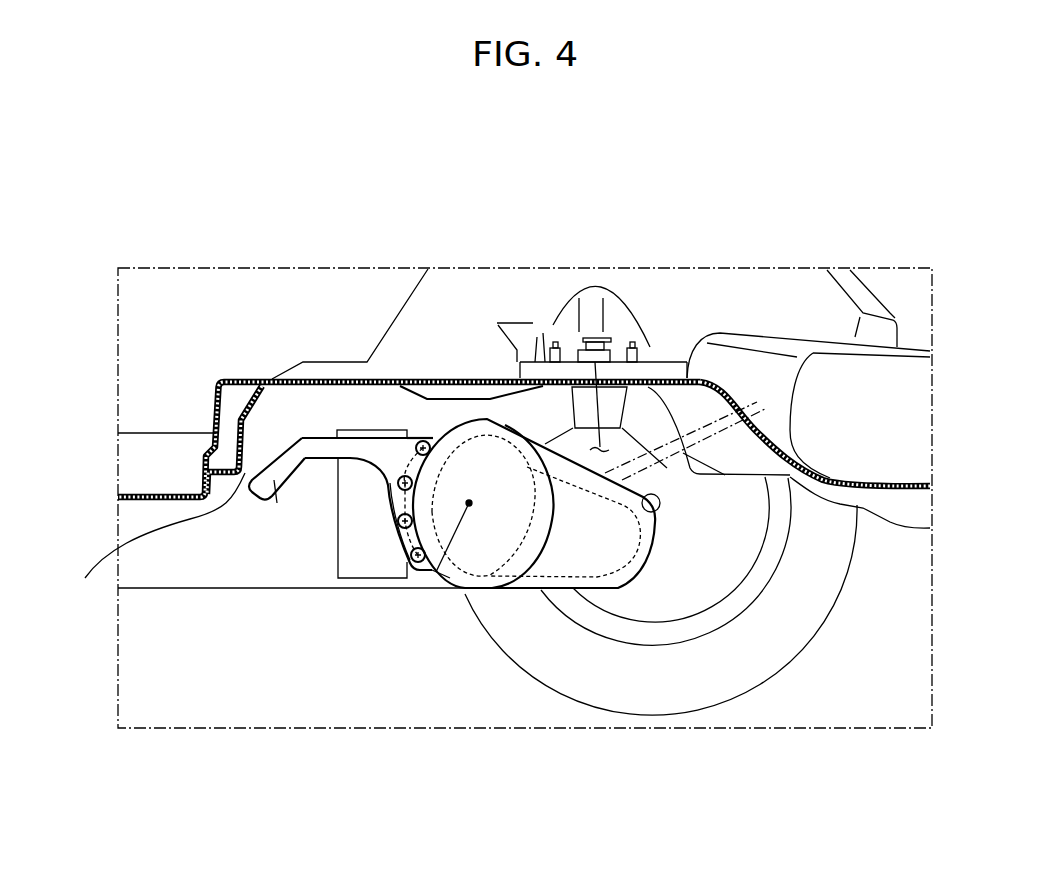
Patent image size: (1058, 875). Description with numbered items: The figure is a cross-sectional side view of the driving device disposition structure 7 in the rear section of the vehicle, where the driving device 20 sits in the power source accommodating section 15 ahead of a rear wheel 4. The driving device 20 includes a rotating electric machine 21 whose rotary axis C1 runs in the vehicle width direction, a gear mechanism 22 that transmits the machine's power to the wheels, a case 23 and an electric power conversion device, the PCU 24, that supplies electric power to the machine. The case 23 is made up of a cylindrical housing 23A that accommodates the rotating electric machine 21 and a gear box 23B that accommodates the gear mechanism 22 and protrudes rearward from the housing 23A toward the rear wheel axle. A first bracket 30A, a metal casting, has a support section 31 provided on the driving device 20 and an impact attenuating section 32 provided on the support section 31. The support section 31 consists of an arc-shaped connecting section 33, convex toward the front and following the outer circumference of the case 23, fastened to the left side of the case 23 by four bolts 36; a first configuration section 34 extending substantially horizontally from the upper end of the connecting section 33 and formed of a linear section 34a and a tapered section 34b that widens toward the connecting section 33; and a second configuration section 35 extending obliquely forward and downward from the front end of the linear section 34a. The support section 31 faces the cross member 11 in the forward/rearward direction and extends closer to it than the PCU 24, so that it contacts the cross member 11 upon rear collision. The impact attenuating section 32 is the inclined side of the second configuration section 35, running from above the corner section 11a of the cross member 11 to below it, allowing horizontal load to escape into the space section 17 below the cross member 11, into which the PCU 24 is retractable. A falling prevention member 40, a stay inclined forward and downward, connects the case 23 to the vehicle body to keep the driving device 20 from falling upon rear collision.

The driving device disposition structure 7 is at (896, 184).
The cross member 11 is at (253, 404).
The corner section 11a is at (153, 544).
The space section 17 is at (208, 546).
The impact attenuating section 32 is at (276, 462).
The second configuration section 35 is at (274, 480).
The first bracket 30A is at (298, 430).
The support section 31 is at (354, 466).
The arc-shaped connecting section 33 is at (403, 540).
The electric power conversion device (PCU) 24 is at (358, 545).
The first configuration section 34 is at (468, 158).
The linear section 34a is at (320, 450).
The tapered section 34b is at (375, 452).
The bolts 36 is at (425, 550).
The driving device 20 is at (516, 598).
The rotating electric machine 21 is at (487, 590).
The rotary axis C1 is at (436, 572).
The case 23 is at (477, 600).
The housing 23A is at (450, 578).
The gear box 23B is at (588, 583).
The gear mechanism 22 is at (650, 578).
The power source accommodating section 15 is at (595, 340).
The falling prevention member 40 is at (690, 468).
The rear wheel 4 is at (767, 638).